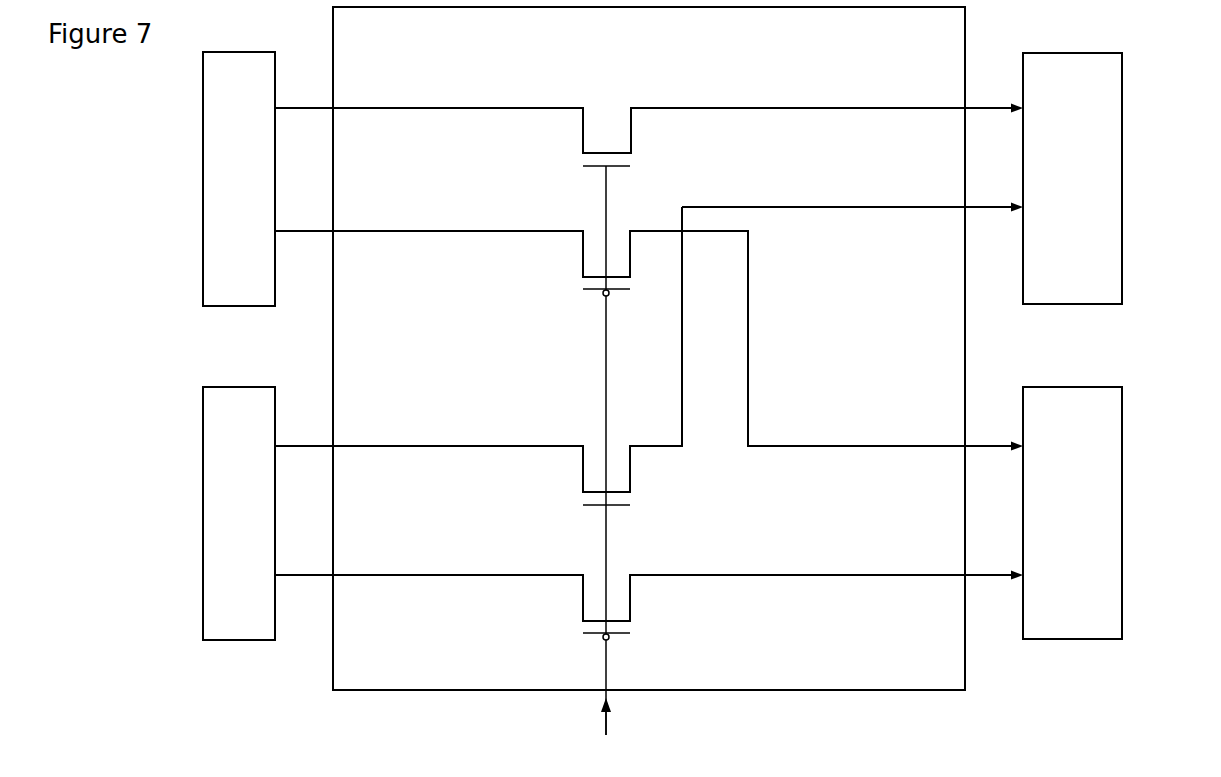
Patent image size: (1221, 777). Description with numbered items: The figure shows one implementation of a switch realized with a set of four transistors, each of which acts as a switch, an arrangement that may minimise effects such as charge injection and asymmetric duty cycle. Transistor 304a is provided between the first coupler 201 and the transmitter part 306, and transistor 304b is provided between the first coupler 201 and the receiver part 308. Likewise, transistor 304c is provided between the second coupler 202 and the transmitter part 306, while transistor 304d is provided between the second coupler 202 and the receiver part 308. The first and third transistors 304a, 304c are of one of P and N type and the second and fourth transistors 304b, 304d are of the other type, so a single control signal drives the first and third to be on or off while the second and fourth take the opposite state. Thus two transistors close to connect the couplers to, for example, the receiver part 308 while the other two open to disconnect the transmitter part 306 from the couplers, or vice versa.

The first coupler 201 is at (239, 179).
The second coupler 202 is at (239, 513).
The transmitter part 306 is at (1072, 178).
The receiver part 308 is at (1072, 513).
The transistor 304a is at (631, 106).
The transistor 304b is at (590, 292).
The transistor 304c is at (593, 507).
The transistor 304d is at (592, 636).